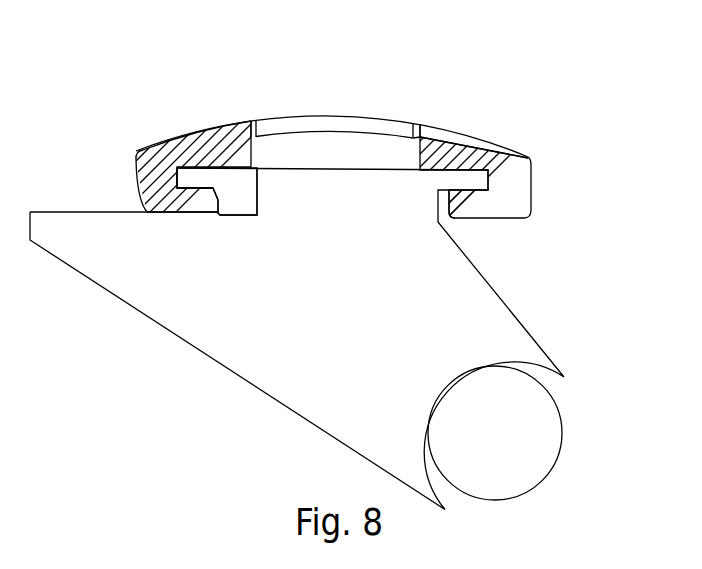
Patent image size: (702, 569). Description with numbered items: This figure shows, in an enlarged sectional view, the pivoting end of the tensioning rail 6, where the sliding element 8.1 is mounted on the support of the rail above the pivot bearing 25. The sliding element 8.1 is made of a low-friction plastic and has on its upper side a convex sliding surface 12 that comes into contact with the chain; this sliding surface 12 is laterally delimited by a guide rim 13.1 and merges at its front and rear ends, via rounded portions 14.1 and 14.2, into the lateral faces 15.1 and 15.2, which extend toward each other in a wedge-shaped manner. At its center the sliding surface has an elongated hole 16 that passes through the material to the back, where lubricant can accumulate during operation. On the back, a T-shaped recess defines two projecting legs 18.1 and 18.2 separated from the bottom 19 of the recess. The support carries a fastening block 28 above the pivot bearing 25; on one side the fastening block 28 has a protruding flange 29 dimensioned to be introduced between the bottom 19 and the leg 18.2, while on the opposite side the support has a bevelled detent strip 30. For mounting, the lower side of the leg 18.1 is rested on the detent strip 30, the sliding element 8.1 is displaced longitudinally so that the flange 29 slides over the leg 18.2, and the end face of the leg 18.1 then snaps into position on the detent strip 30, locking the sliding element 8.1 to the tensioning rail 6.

The tensioning rail 6 is at (341, 349).
The sliding element 8.1 is at (529, 150).
The sliding surface 12 is at (331, 196).
The guide rim 13.1 is at (437, 123).
The rounded portion 14.1 is at (475, 213).
The rounded portion 14.2 is at (150, 236).
The lateral face 15.1 is at (529, 190).
The lateral face 15.2 is at (137, 181).
The elongated hole 16 is at (389, 105).
The projecting leg 18.1 is at (187, 214).
The projecting leg 18.2 is at (477, 218).
The bottom of the T-shaped recess 19 is at (228, 170).
The pivot bearing 25 is at (532, 433).
The fastening block 28 is at (347, 178).
The flange 29 is at (521, 211).
The detent strip 30 is at (221, 215).